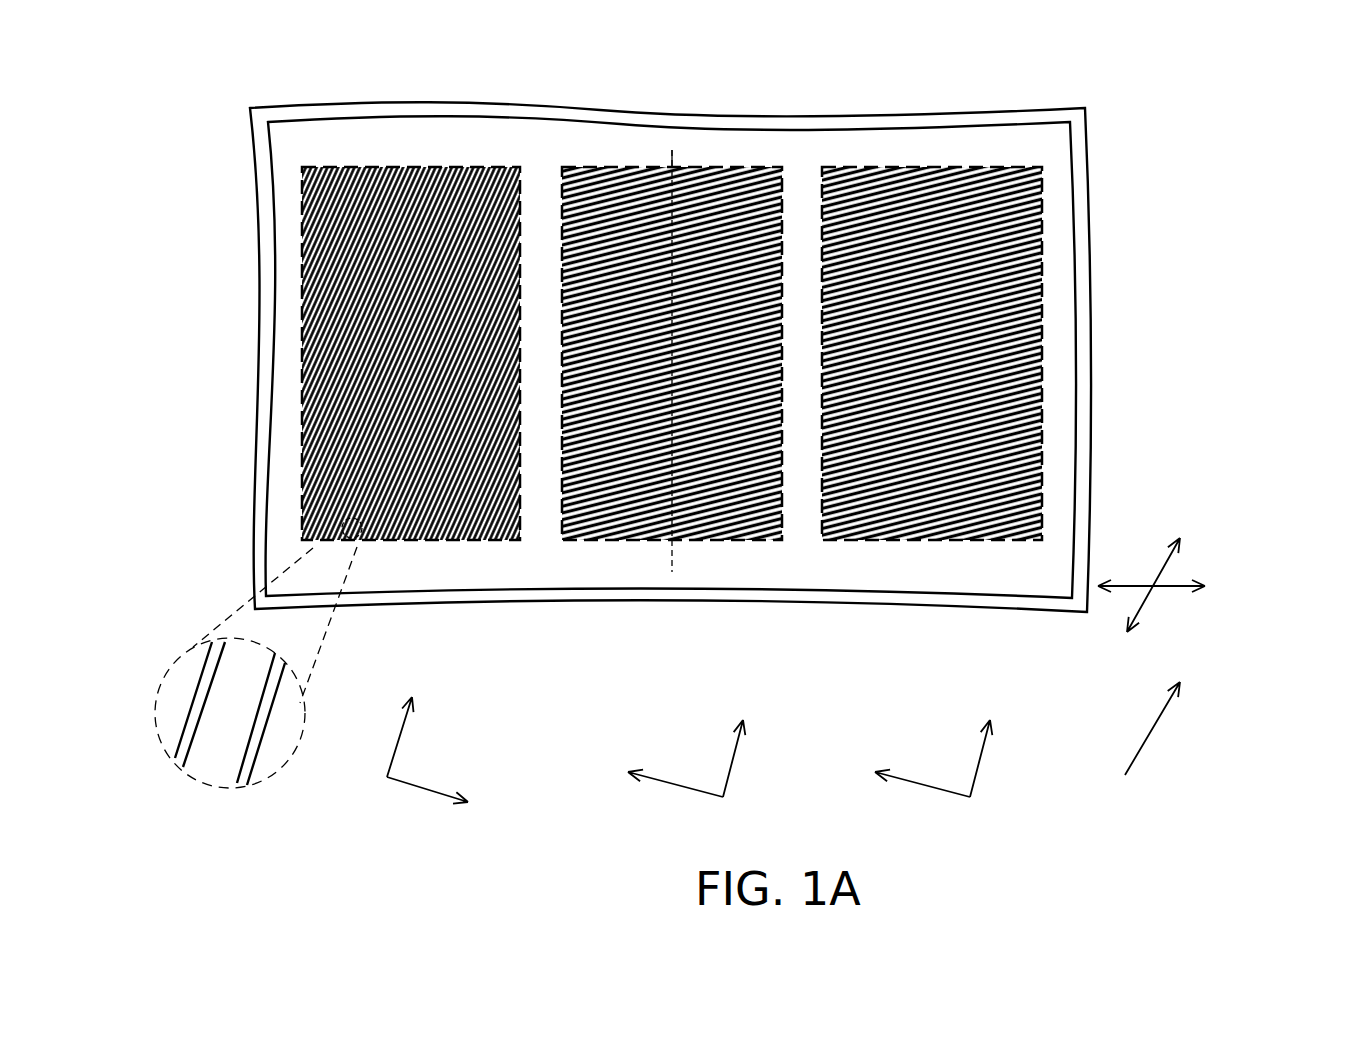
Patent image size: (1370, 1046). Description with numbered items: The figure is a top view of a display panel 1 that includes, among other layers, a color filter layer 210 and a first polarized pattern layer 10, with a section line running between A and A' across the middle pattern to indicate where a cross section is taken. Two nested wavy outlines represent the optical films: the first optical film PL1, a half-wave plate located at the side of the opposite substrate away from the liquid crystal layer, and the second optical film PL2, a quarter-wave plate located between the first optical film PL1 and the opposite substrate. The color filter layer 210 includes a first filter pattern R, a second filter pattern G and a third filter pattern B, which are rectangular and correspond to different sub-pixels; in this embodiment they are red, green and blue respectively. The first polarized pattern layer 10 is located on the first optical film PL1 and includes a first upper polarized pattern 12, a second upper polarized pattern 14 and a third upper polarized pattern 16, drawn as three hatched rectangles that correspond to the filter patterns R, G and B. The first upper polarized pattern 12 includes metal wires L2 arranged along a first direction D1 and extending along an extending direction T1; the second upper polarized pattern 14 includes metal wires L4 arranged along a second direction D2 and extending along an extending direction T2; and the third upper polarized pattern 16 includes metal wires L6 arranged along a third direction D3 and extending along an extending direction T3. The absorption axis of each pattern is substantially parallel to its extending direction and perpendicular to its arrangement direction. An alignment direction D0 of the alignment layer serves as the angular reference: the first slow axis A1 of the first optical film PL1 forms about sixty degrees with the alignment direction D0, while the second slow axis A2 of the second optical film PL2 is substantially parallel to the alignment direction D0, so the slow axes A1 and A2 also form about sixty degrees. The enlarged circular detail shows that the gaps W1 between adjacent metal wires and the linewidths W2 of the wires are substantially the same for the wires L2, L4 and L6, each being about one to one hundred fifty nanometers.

The display panel 1 is at (1326, 712).
The first polarized pattern layer 10 is at (1292, 105).
The first upper polarized pattern 12 is at (333, 228).
The second upper polarized pattern 14 is at (645, 190).
The third upper polarized pattern 16 is at (950, 225).
The color filter layer 210 is at (1292, 253).
The first filter pattern R is at (348, 163).
The second filter pattern G is at (573, 163).
The third filter pattern B is at (873, 163).
The first optical film PL1 is at (283, 352).
The second optical film PL2 is at (263, 293).
The metal wires L2 is at (500, 540).
The metal wires L4 is at (765, 540).
The metal wires L6 is at (1020, 540).
The section line A is at (702, 369).
The section line A' is at (706, 149).
The first slow axis A1 is at (1175, 585).
The second slow axis A2 is at (1163, 566).
The alignment direction D0 is at (1166, 707).
The first direction D1 is at (427, 803).
The second direction D2 is at (753, 758).
The third direction D3 is at (1003, 758).
The extending direction T1 is at (383, 737).
The extending direction T2 is at (675, 770).
The extending direction T3 is at (922, 768).
The gap W1 is at (233, 747).
The linewidth W2 is at (207, 728).